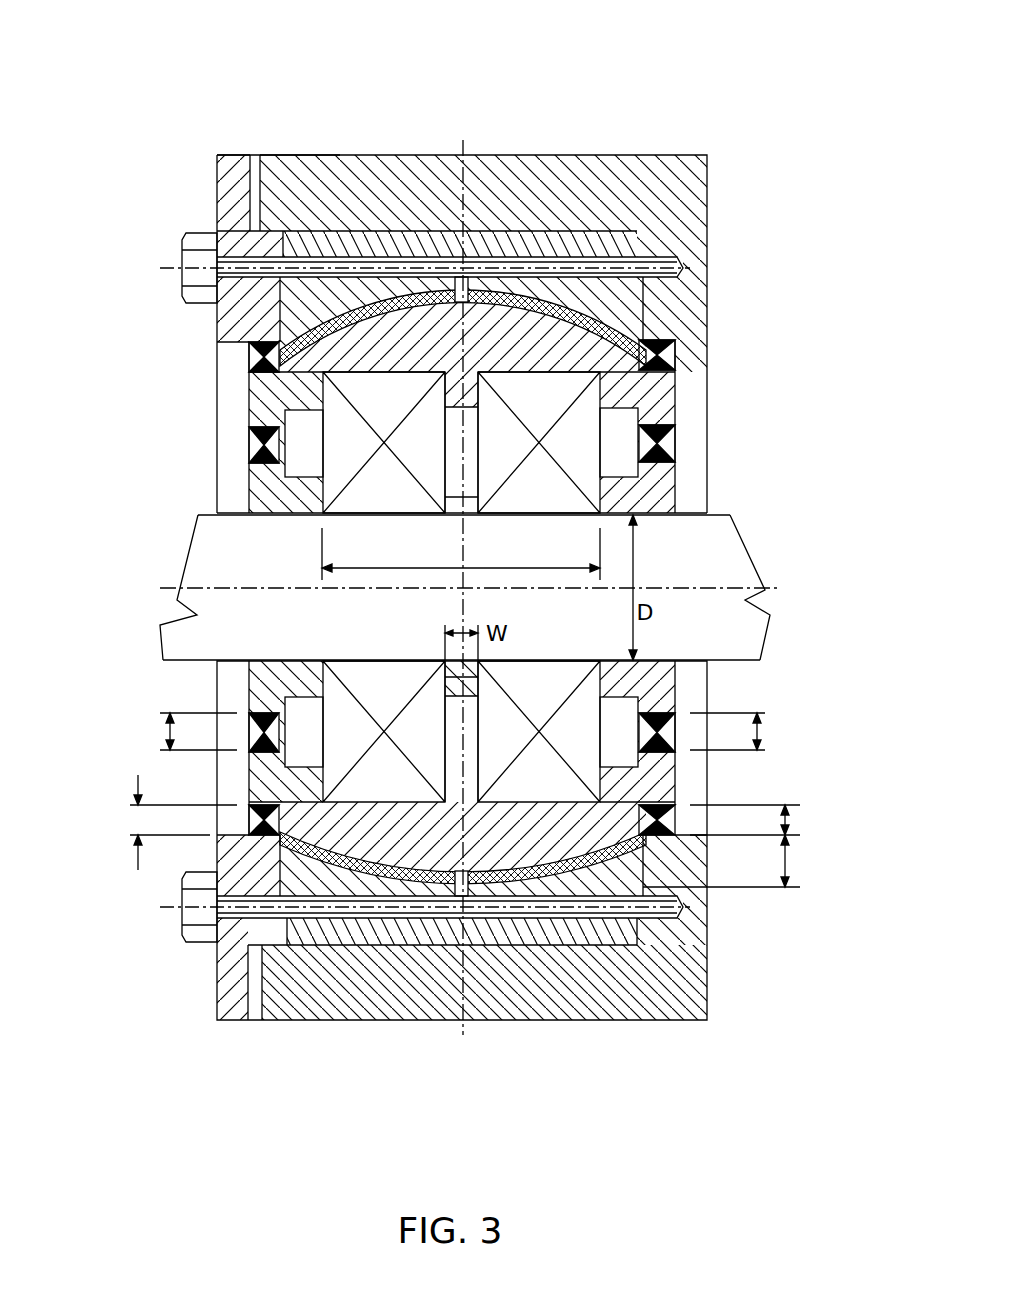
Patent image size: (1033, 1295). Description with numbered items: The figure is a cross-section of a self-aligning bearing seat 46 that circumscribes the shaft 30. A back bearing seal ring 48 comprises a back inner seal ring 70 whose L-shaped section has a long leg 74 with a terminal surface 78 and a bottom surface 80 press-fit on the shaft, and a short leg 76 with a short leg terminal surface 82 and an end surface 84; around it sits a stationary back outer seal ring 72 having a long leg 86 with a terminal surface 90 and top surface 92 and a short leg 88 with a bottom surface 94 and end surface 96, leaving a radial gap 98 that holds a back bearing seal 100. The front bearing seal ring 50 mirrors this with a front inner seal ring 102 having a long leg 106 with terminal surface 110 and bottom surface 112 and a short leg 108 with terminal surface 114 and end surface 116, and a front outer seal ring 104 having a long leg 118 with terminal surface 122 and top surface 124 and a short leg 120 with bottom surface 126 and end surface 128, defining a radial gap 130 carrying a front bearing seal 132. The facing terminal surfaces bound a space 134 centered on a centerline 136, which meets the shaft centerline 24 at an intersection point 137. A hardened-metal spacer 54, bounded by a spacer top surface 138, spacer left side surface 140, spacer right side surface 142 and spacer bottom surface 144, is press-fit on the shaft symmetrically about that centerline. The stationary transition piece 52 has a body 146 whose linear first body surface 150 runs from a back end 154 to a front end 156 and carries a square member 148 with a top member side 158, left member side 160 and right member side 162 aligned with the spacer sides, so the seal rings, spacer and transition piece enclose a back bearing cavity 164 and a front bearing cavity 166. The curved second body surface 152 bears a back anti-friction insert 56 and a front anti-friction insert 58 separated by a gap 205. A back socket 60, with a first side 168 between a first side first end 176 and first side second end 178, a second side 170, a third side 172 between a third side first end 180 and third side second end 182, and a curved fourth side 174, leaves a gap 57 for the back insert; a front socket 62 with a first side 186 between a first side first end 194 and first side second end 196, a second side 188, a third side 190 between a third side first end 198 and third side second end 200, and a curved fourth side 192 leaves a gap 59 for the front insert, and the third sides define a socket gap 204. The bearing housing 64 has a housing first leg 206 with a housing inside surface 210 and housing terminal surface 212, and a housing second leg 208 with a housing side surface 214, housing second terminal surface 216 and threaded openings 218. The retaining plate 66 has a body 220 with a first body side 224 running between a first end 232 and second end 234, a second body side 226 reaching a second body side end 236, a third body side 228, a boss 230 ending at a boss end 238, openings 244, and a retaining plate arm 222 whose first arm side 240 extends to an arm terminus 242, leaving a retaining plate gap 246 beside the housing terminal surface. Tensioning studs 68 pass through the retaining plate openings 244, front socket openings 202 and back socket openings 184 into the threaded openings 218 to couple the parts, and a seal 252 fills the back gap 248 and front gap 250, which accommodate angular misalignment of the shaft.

The centerline 24 is at (165, 588).
The shaft 30 is at (765, 620).
The self-aligning bearing seat 46 is at (152, 45).
The back bearing seal ring 48 is at (820, 434).
The front bearing seal ring 50 is at (95, 432).
The transition piece 52 is at (495, 425).
The spacer 54 is at (447, 515).
The back anti-friction insert 56 is at (690, 878).
The gap 57 is at (520, 865).
The front anti-friction insert 58 is at (222, 865).
The gap 59 is at (380, 830).
The back socket 60 is at (540, 1020).
The front socket 62 is at (365, 1020).
The bearing housing 64 is at (707, 1015).
The retaining plate 66 is at (217, 992).
The tensioning stud 68 is at (182, 905).
The back inner seal ring 70 is at (680, 494).
The back outer seal ring 72 is at (678, 416).
The long leg 74 is at (620, 515).
The short leg 76 is at (680, 473).
The terminal surface 78 is at (598, 490).
The bottom surface 80 is at (655, 515).
The short leg terminal surface 82 is at (680, 452).
The end surface 84 is at (703, 514).
The long leg 86 is at (680, 382).
The short leg 88 is at (707, 440).
The terminal surface 90 is at (590, 400).
The top surface 92 is at (680, 358).
The bottom surface 94 is at (640, 422).
The end surface 96 is at (707, 395).
The radial gap 98 is at (714, 732).
The back bearing seal 100 is at (605, 735).
The front inner seal ring 102 is at (249, 492).
The front outer seal ring 104 is at (285, 420).
The long leg 106 is at (268, 515).
The short leg 108 is at (249, 468).
The terminal surface 110 is at (330, 515).
The bottom surface 112 is at (302, 515).
The terminal surface 114 is at (312, 448).
The end surface 116 is at (249, 508).
The long leg 118 is at (275, 385).
The short leg 120 is at (249, 445).
The terminal surface 122 is at (345, 380).
The top surface 124 is at (262, 360).
The bottom surface 126 is at (340, 408).
The end surface 128 is at (249, 392).
The radial gap 130 is at (198, 732).
The front bearing seal 132 is at (323, 730).
The space 134 is at (461, 554).
The centerline 136 is at (462, 156).
The intersection point 137 is at (462, 590).
The spacer top surface 138 is at (470, 487).
The spacer left side surface 140 is at (440, 508).
The spacer right side surface 142 is at (493, 512).
The spacer bottom surface 144 is at (478, 518).
The body 146 is at (463, 858).
The member 148 is at (442, 768).
The first body surface 150 is at (353, 802).
The second body surface 152 is at (505, 860).
The back end 154 is at (640, 815).
The front end 156 is at (280, 825).
The top member side 158 is at (478, 765).
The left member side 160 is at (445, 792).
The right member side 162 is at (478, 790).
The back bearing cavity 164 is at (539, 731).
The front bearing cavity 166 is at (384, 731).
The first side 168 is at (690, 935).
The second side 170 is at (585, 1020).
The third side 172 is at (495, 1020).
The fourth side 174 is at (780, 866).
The first side first end 176 is at (690, 825).
The first side second end 178 is at (700, 972).
The third side first end 180 is at (463, 1020).
The third side second end 182 is at (466, 866).
The openings 184 is at (630, 1020).
The first side 186 is at (250, 945).
The second side 188 is at (300, 1020).
The third side 190 is at (440, 1020).
The fourth side 192 is at (345, 862).
The first side first end 194 is at (255, 1020).
The first side second end 196 is at (138, 850).
The third side first end 198 is at (400, 1020).
The third side second end 200 is at (455, 860).
The openings 202 is at (336, 1020).
The socket gap 204 is at (483, 156).
The gap 205 is at (480, 312).
The housing first leg 206 is at (372, 156).
The housing second leg 208 is at (703, 262).
The housing inside surface 210 is at (405, 156).
The housing terminal surface 212 is at (257, 156).
The housing side surface 214 is at (693, 305).
The housing second terminal surface 216 is at (703, 332).
The threaded openings 218 is at (703, 235).
The body 220 is at (253, 293).
The retaining plate arm 222 is at (217, 178).
The first body side 224 is at (235, 333).
The second body side 226 is at (240, 297).
The third body side 228 is at (182, 268).
The boss 230 is at (250, 215).
The first end 232 is at (300, 330).
The second end 234 is at (250, 355).
The second body side end 236 is at (322, 156).
The boss end 238 is at (240, 240).
The first arm side 240 is at (226, 157).
The arm terminus 242 is at (226, 156).
The openings 244 is at (217, 247).
The retaining plate gap 246 is at (270, 148).
The back gap 248 is at (755, 820).
The front gap 250 is at (172, 805).
The seal 252 is at (249, 818).